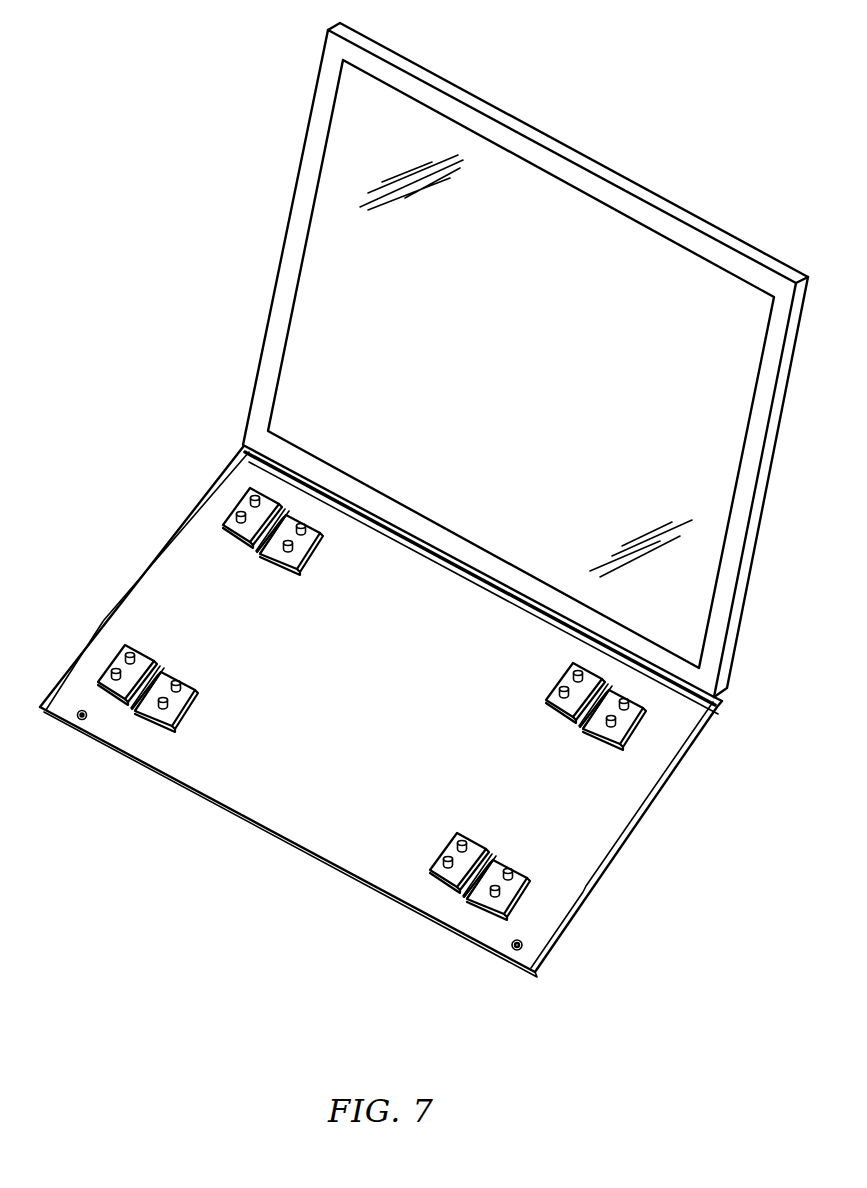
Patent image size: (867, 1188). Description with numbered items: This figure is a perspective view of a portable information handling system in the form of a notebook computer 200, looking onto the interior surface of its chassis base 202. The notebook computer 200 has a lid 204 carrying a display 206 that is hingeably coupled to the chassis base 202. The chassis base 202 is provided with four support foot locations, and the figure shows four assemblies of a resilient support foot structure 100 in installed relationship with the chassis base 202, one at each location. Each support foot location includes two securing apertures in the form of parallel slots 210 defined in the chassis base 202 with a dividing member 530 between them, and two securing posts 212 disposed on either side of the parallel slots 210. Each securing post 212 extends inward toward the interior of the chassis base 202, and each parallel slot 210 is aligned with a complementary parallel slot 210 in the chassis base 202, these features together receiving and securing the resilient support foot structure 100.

The notebook computer 200 is at (173, 171).
The chassis base 202 is at (650, 820).
The lid 204 is at (745, 598).
The display 206 is at (713, 498).
The resilient support foot structure 100 is at (300, 567).
The parallel slots 210 is at (250, 548).
The securing posts 212 is at (255, 497).
The dividing member 530 is at (258, 552).